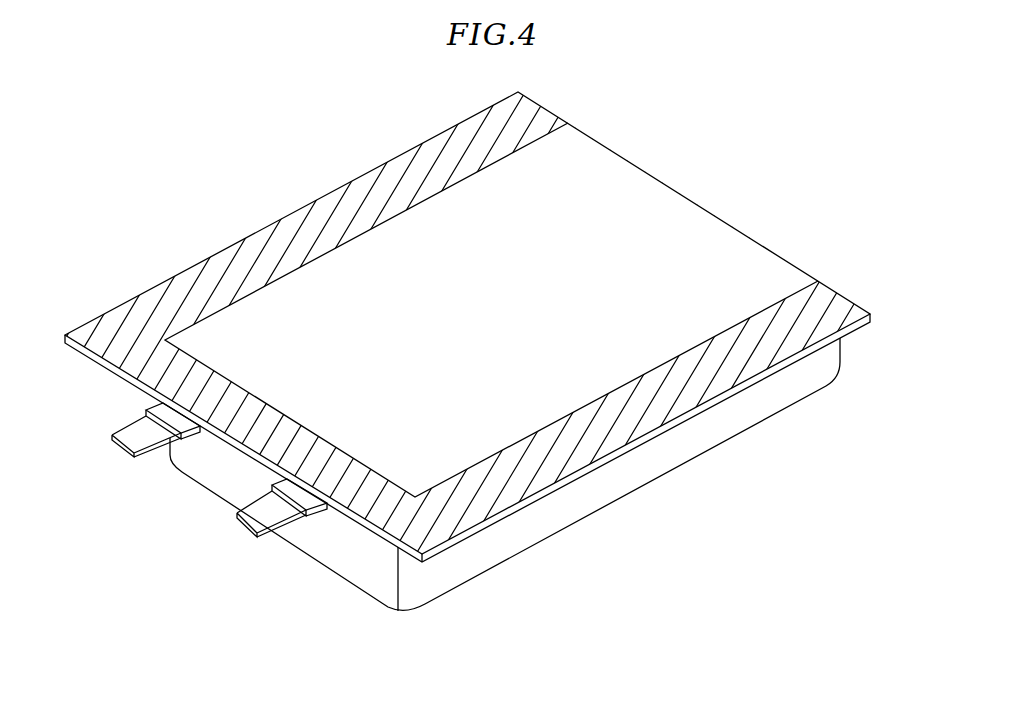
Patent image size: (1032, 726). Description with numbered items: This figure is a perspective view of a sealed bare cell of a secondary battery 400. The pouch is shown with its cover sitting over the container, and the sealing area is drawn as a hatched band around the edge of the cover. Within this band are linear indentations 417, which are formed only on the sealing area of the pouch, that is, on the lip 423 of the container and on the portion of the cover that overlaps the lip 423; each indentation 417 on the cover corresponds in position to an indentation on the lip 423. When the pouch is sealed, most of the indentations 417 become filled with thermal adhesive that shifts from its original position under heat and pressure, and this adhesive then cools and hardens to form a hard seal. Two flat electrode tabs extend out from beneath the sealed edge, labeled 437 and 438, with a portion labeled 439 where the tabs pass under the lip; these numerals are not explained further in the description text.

The secondary battery 400 is at (386, 131).
The indentations 417 is at (363, 208).
The lip 423 is at (267, 255).
The first terminal tab 437 is at (140, 438).
The second terminal tab 438 is at (265, 515).
The tab seat 439 is at (162, 408).